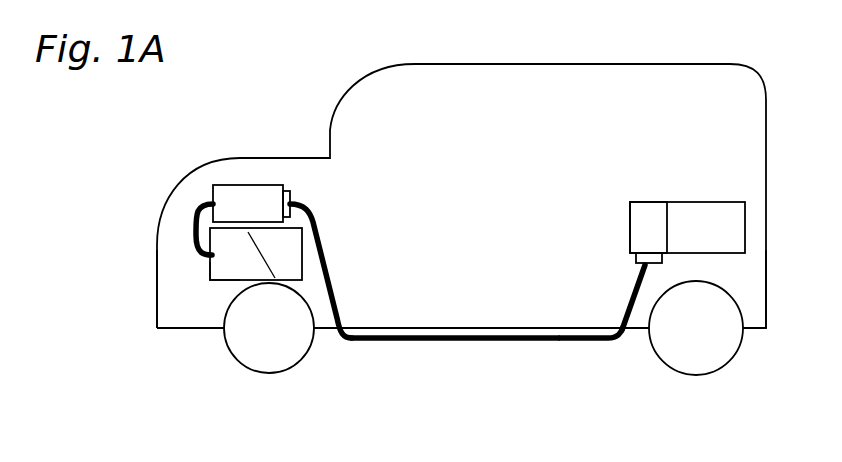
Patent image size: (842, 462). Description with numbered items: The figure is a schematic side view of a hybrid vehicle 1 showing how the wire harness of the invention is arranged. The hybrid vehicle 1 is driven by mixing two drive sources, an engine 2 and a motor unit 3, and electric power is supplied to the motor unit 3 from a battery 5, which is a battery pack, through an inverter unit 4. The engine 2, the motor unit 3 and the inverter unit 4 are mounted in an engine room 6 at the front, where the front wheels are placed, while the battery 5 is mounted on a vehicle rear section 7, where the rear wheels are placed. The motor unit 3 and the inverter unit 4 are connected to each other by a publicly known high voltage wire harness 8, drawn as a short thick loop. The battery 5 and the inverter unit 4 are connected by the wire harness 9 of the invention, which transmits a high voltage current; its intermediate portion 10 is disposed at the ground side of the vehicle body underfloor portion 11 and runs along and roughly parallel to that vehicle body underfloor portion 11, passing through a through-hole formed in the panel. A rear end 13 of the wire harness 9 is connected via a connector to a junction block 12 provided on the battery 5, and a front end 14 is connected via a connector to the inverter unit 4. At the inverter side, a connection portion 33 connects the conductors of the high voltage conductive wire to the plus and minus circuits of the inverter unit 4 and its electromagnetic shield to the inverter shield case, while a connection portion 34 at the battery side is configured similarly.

The hybrid vehicle 1 is at (276, 120).
The engine 2 is at (287, 276).
The motor unit 3 is at (222, 282).
The inverter unit 4 is at (232, 200).
The battery 5 is at (707, 215).
The engine room 6 is at (170, 312).
The vehicle rear section 7 is at (755, 278).
The high voltage wire harness 8 is at (188, 215).
The wire harness 9 is at (449, 348).
The intermediate portion 10 is at (520, 345).
The vehicle body underfloor portion 11 is at (587, 345).
The junction block 12 is at (650, 215).
The rear end 13 is at (635, 270).
The front end 14 is at (305, 200).
The connection portion at the inverter side 33 is at (290, 195).
The connection portion at the battery side 34 is at (637, 255).